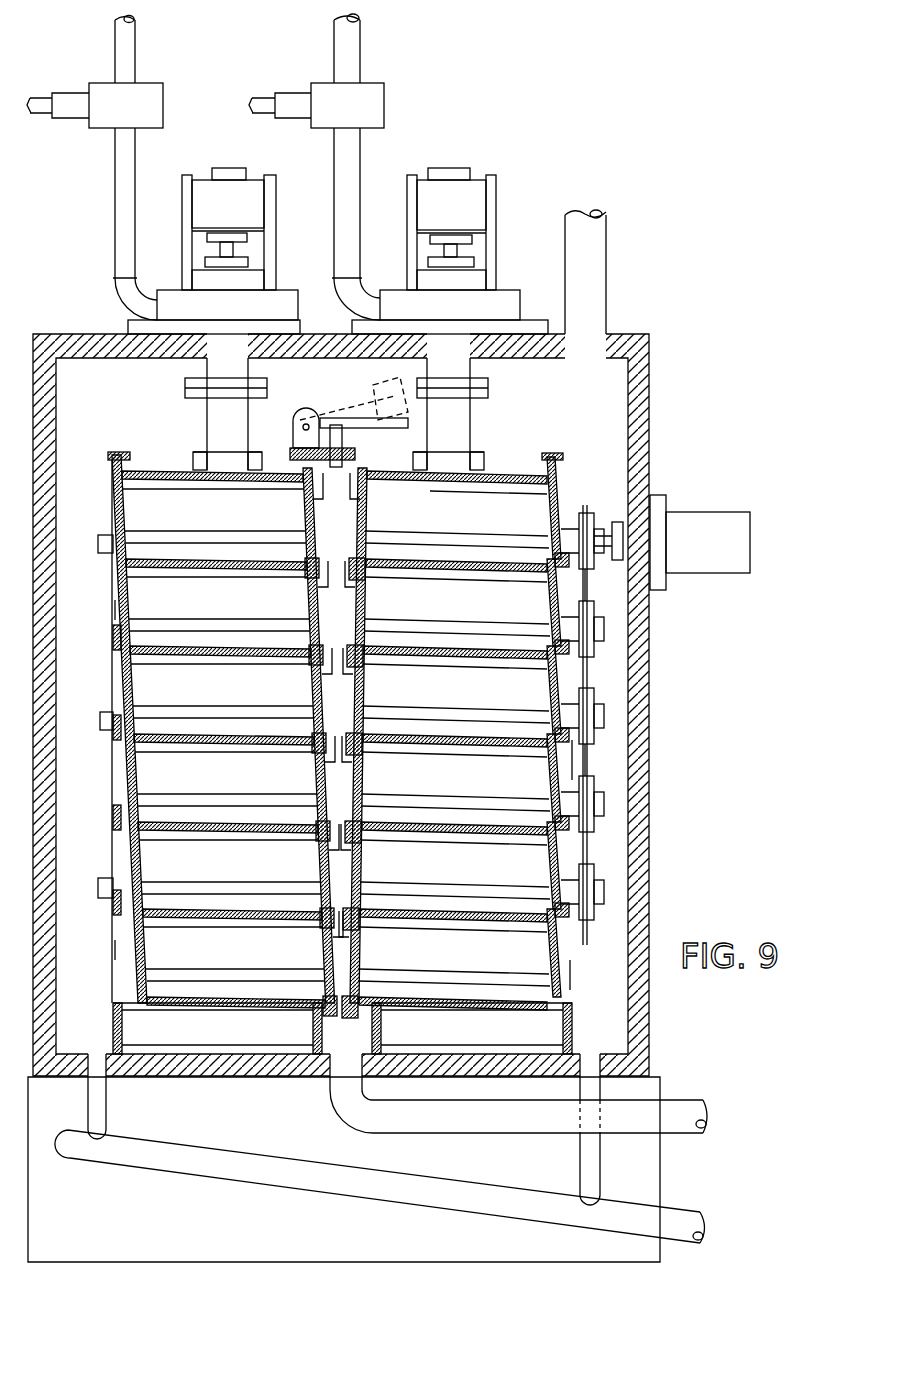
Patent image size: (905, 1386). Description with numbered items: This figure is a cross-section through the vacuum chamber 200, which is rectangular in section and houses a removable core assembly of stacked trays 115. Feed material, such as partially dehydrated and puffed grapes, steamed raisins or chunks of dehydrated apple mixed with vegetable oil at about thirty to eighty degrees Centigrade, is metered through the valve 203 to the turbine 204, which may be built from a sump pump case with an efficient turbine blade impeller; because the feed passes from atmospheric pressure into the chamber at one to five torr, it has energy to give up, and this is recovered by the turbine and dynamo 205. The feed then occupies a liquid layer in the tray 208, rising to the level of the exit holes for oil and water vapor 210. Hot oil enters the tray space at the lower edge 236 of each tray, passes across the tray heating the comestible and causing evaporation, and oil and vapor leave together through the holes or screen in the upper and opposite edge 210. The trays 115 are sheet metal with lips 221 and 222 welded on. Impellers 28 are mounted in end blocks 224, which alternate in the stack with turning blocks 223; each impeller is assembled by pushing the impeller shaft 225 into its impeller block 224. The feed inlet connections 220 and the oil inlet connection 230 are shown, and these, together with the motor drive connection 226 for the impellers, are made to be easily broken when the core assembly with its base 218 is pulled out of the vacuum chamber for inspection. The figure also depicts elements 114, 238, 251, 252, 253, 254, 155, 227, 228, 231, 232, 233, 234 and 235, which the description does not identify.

The conduit 114 is at (136, 55).
The valve 203 is at (164, 108).
The turbine 204 is at (511, 306).
The dynamo 205 is at (339, 229).
The pipe 238 is at (606, 286).
The feed inlet connections 220 is at (267, 389).
The support 251 is at (350, 446).
The arm in raised position 252 is at (354, 396).
The pivot 253 is at (342, 428).
The arm 254 is at (408, 416).
The tray cover 155 is at (516, 459).
The trays 115 is at (220, 822).
The tray 208 is at (412, 644).
The impellers 28 is at (457, 519).
The base 218 is at (472, 1028).
The exit holes for oil and water vapor 210 is at (130, 497).
The lip 222 is at (326, 494).
The lower edge 236 is at (308, 640).
The lip 221 is at (112, 456).
The impeller shaft 225 is at (112, 540).
The end blocks 224 is at (570, 504).
The rod 235 is at (586, 927).
The motor drive connection 226 is at (616, 520).
The shaft 227 is at (616, 561).
The motor 228 is at (690, 575).
The belt 234 is at (600, 870).
The turning blocks 223 is at (113, 611).
The drain pipe 233 is at (106, 1098).
The outlet pipe 231 is at (484, 1137).
The oil inlet connection 230 is at (335, 1090).
The drain line 232 is at (150, 1143).
The vacuum chamber 200 is at (650, 862).